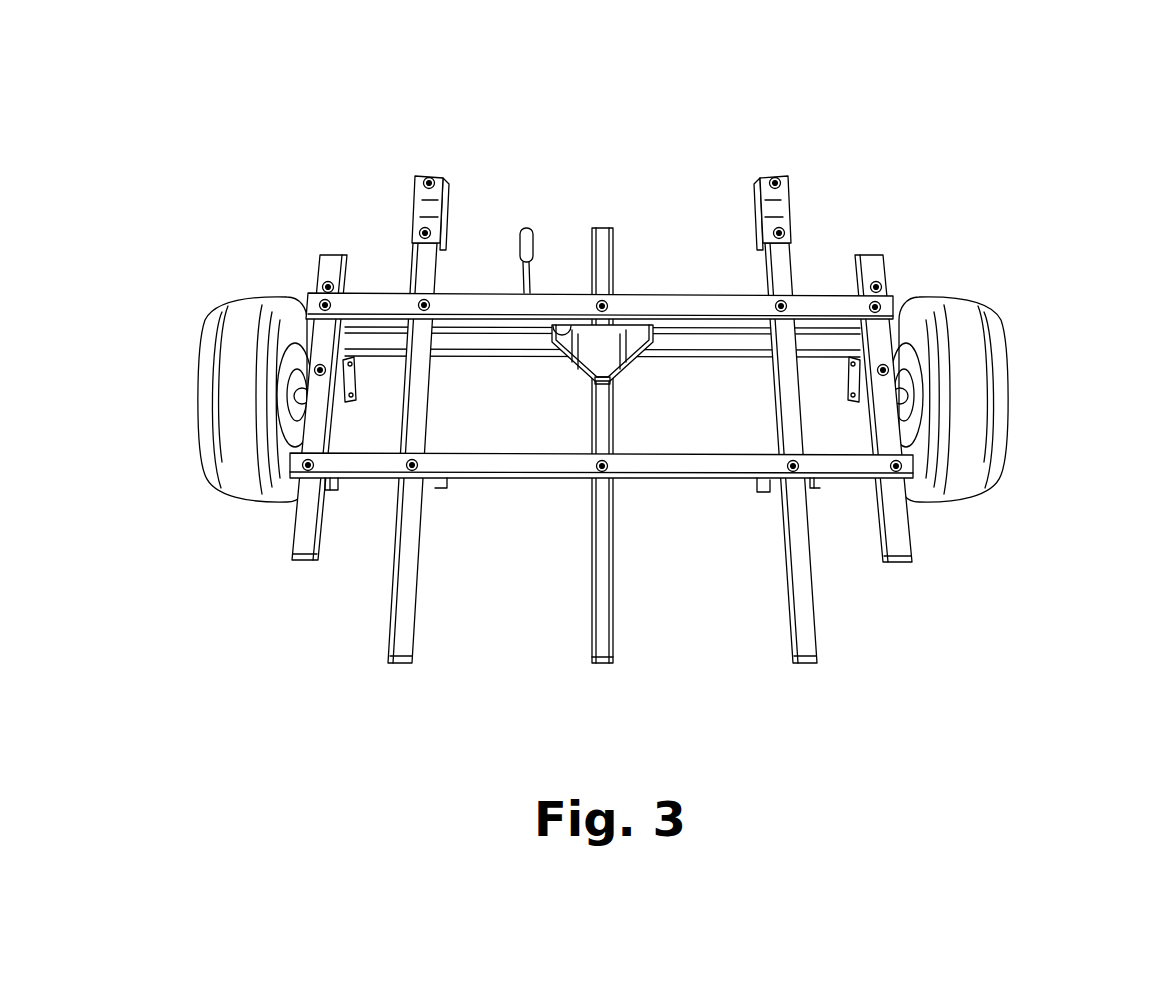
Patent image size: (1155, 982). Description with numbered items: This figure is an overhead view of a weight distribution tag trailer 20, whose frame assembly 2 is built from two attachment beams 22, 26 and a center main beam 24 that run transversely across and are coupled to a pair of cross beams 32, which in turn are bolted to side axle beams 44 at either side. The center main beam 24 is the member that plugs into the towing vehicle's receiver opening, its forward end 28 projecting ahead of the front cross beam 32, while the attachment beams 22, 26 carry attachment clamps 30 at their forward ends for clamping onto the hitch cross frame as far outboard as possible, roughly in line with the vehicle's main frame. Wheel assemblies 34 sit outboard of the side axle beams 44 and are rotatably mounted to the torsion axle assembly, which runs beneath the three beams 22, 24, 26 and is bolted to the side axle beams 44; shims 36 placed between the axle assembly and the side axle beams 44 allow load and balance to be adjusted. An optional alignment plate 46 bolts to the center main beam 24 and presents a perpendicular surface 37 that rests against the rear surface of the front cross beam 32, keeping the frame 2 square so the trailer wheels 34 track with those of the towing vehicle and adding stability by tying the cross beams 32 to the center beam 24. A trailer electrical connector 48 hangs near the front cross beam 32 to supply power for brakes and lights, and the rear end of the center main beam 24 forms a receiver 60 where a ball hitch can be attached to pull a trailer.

The frame assembly 2 is at (618, 396).
The weight distribution tag trailer 20 is at (497, 196).
The attachment beam 22 is at (401, 664).
The center main beam 24 is at (635, 425).
The attachment beam 26 is at (803, 664).
The post upper end 28 is at (598, 226).
The attachment clamp 30 is at (428, 177).
The cross beam 32 is at (473, 310).
The wheel assembly 34 is at (226, 440).
The shim 36 is at (348, 383).
The perpendicular surface 37 is at (556, 326).
The side axle beam 44 is at (304, 565).
The alignment plate 46 is at (641, 332).
The trailer electrical connector 48 is at (528, 224).
The receiver 60 is at (603, 664).